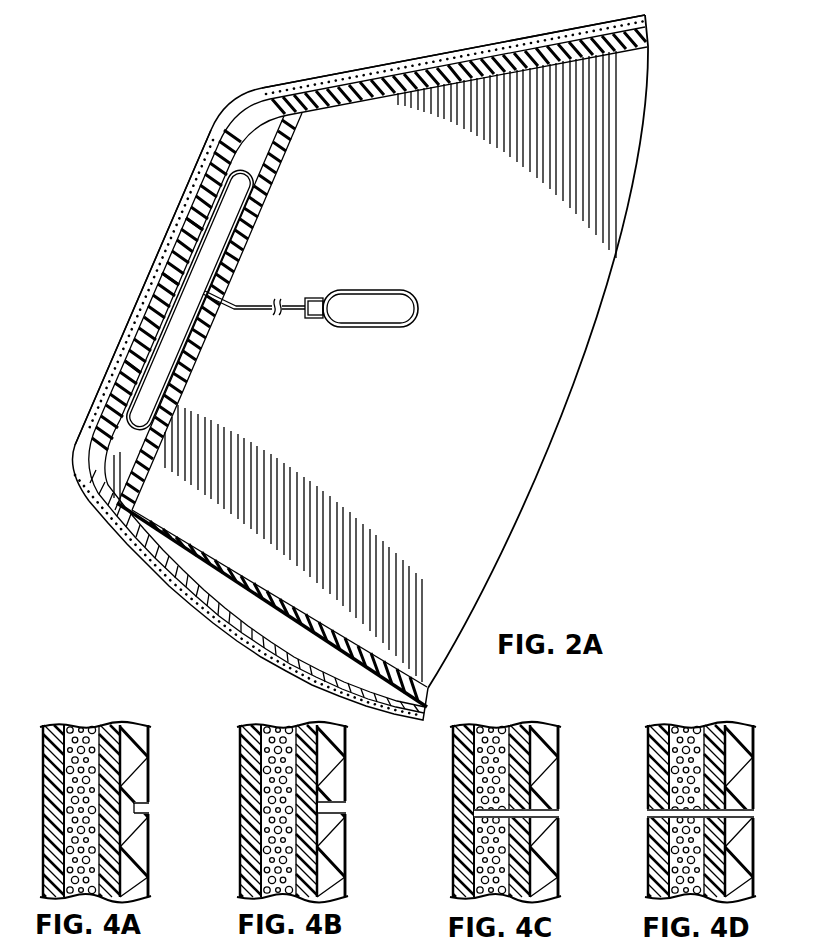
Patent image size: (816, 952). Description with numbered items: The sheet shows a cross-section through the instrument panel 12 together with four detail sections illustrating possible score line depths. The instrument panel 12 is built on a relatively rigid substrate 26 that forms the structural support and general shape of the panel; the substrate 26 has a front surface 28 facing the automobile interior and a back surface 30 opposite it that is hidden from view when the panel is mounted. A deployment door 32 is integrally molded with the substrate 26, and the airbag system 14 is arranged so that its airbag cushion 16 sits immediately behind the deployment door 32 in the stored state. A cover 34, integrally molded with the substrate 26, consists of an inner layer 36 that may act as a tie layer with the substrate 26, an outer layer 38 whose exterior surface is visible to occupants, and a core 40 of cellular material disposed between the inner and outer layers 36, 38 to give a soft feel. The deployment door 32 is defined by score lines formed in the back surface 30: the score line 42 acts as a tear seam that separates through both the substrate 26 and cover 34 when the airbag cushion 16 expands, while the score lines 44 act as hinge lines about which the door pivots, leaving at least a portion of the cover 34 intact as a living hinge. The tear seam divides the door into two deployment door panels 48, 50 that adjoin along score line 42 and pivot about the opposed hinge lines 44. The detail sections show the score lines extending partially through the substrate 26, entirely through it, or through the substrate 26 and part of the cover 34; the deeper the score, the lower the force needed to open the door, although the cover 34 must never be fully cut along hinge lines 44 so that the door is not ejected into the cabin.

In FIG. 2A, the instrument panel 12 is at (173, 103).
In FIG. 2A, the airbag system 14 is at (416, 290).
In FIG. 2A, the airbag cushion 16 is at (215, 229).
In FIG. 2A, the substrate 26 is at (584, 57).
In FIG. 4A, the substrate 26 is at (105, 803).
In FIG. 4B, the substrate 26 is at (310, 812).
In FIG. 4C, the substrate 26 is at (516, 803).
In FIG. 4D, the substrate 26 is at (710, 803).
In FIG. 2A, the front surface 28 is at (330, 90).
In FIG. 2A, the back surface 30 is at (248, 157).
In FIG. 4A, the back surface 30 is at (167, 810).
In FIG. 4B, the back surface 30 is at (364, 811).
In FIG. 4C, the back surface 30 is at (579, 811).
In FIG. 4D, the back surface 30 is at (768, 811).
In FIG. 2A, the deployment door 32 is at (132, 316).
In FIG. 2A, the cover 34 is at (263, 106).
In FIG. 4A, the cover 34 is at (83, 784).
In FIG. 4B, the cover 34 is at (294, 794).
In FIG. 4C, the cover 34 is at (497, 784).
In FIG. 4D, the cover 34 is at (691, 784).
In FIG. 2A, the inner layer 36 is at (110, 528).
In FIG. 4A, the inner layer 36 is at (113, 793).
In FIG. 4B, the inner layer 36 is at (339, 811).
In FIG. 4C, the inner layer 36 is at (525, 794).
In FIG. 4D, the inner layer 36 is at (719, 793).
In FIG. 2A, the outer layer 38 is at (117, 548).
In FIG. 4A, the outer layer 38 is at (52, 794).
In FIG. 4B, the outer layer 38 is at (234, 811).
In FIG. 4C, the outer layer 38 is at (463, 794).
In FIG. 4D, the outer layer 38 is at (658, 794).
In FIG. 2A, the core 40 is at (157, 588).
In FIG. 4A, the core 40 is at (82, 794).
In FIG. 4B, the core 40 is at (253, 811).
In FIG. 4C, the core 40 is at (492, 794).
In FIG. 4D, the core 40 is at (687, 794).
In FIG. 2A, the score line 42 is at (163, 280).
In FIG. 4A, the score line 42 is at (160, 801).
In FIG. 4B, the score line 42 is at (352, 800).
In FIG. 4C, the score line 42 is at (537, 804).
In FIG. 4D, the score line 42 is at (714, 804).
In FIG. 2A, the score lines 44 is at (226, 168).
In FIG. 2A, the deployment door panel 48 is at (187, 230).
In FIG. 2A, the deployment door panel 50 is at (140, 358).